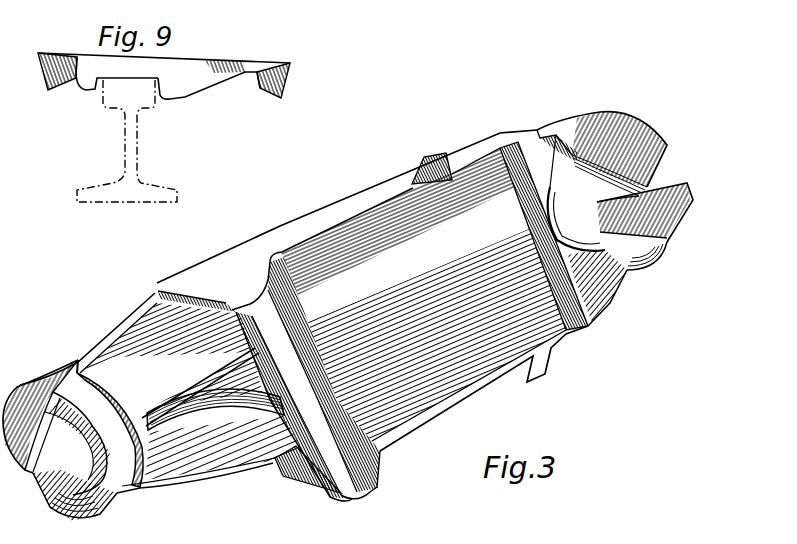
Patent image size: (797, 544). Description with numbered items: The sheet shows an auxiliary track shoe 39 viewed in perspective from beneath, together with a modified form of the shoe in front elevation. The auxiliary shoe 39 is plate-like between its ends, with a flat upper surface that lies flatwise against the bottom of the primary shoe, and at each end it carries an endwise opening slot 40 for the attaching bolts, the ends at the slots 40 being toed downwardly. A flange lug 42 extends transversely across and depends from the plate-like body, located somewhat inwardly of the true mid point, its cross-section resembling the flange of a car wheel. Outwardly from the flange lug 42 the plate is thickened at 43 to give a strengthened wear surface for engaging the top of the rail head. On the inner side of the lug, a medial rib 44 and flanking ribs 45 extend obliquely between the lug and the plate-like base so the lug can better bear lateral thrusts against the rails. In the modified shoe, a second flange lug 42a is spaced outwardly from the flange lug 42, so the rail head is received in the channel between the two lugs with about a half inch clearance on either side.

In FIG. 3, the auxiliary shoe 39 is at (484, 414).
In FIG. 3, the endwise opening slot 40 is at (660, 190).
In FIG. 9, the flange lug 42 is at (173, 102).
In FIG. 3, the flange lug 42 is at (378, 490).
In FIG. 9, the second flange lug 42a is at (90, 92).
In FIG. 3, the thickened plate portion 43 is at (490, 355).
In FIG. 3, the medial rib 44 is at (255, 400).
In FIG. 3, the flanking ribs 45 is at (155, 295).